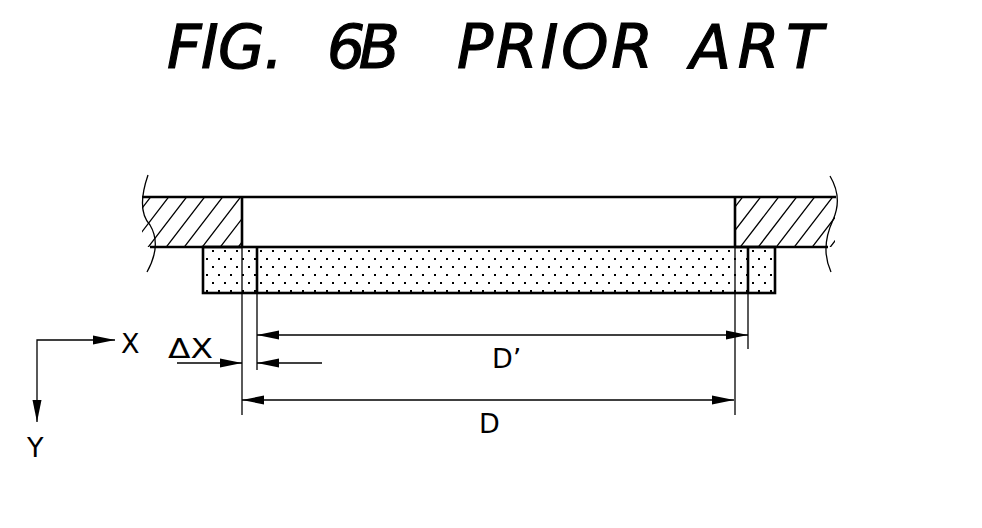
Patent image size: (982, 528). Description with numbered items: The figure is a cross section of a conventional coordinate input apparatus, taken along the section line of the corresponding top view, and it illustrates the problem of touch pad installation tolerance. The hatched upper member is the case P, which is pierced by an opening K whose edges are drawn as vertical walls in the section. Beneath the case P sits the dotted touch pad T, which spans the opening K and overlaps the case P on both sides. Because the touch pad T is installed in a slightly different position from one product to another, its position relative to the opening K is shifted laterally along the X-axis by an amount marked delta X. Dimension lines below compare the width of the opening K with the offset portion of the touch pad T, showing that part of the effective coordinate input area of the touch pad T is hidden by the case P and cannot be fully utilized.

The case P is at (181, 205).
The opening K is at (245, 221).
The touch pad T is at (203, 272).